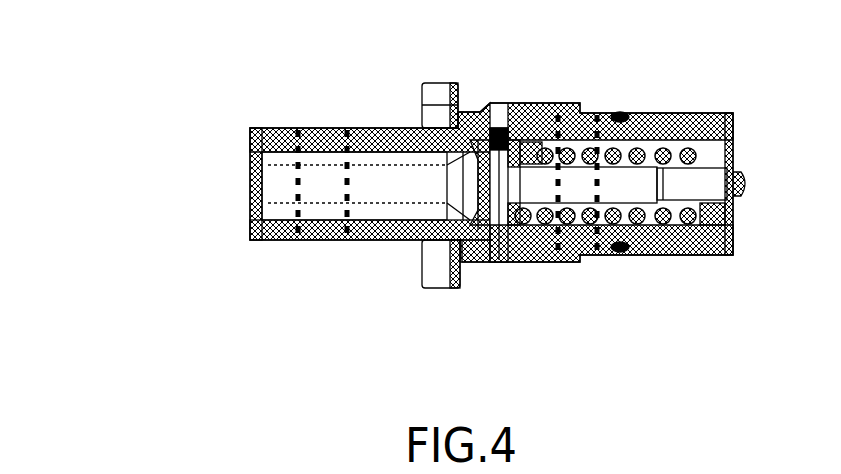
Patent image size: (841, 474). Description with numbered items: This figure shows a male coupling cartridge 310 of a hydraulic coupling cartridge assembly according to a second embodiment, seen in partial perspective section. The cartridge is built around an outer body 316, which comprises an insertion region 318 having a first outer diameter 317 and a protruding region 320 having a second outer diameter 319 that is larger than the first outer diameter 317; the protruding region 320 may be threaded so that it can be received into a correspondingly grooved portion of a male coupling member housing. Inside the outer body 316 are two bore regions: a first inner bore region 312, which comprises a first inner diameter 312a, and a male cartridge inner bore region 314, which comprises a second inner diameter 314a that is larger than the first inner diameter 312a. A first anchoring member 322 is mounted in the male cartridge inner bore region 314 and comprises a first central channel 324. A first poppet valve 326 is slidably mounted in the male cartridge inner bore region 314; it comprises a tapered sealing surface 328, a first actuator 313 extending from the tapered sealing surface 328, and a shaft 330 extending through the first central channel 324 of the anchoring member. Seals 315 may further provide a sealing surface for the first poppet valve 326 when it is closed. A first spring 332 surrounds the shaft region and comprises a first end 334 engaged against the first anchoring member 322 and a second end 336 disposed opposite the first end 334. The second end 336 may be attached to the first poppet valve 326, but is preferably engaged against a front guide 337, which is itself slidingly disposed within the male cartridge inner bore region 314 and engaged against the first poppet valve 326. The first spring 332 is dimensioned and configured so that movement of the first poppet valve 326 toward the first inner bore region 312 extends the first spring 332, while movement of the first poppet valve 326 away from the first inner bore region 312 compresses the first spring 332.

The male coupling cartridge 310 is at (98, 84).
The first inner bore region 312 is at (262, 213).
The first inner diameter 312a is at (347, 220).
The first actuator 313 is at (268, 185).
The male cartridge inner bore region 314 is at (655, 130).
The second inner diameter 314a is at (545, 245).
The seals 315 is at (500, 120).
The outer body 316 is at (452, 83).
The first outer diameter 317 is at (298, 233).
The insertion region 318 is at (265, 132).
The second outer diameter 319 is at (596, 127).
The protruding region 320 is at (577, 262).
The first anchoring member 322 is at (717, 158).
The first central channel 324 is at (711, 218).
The first poppet valve 326 is at (494, 150).
The tapered sealing surface 328 is at (477, 210).
The shaft 330 is at (737, 197).
The first spring 332 is at (647, 232).
The first end 334 is at (697, 153).
The second end 336 is at (542, 127).
The front guide 337 is at (520, 130).